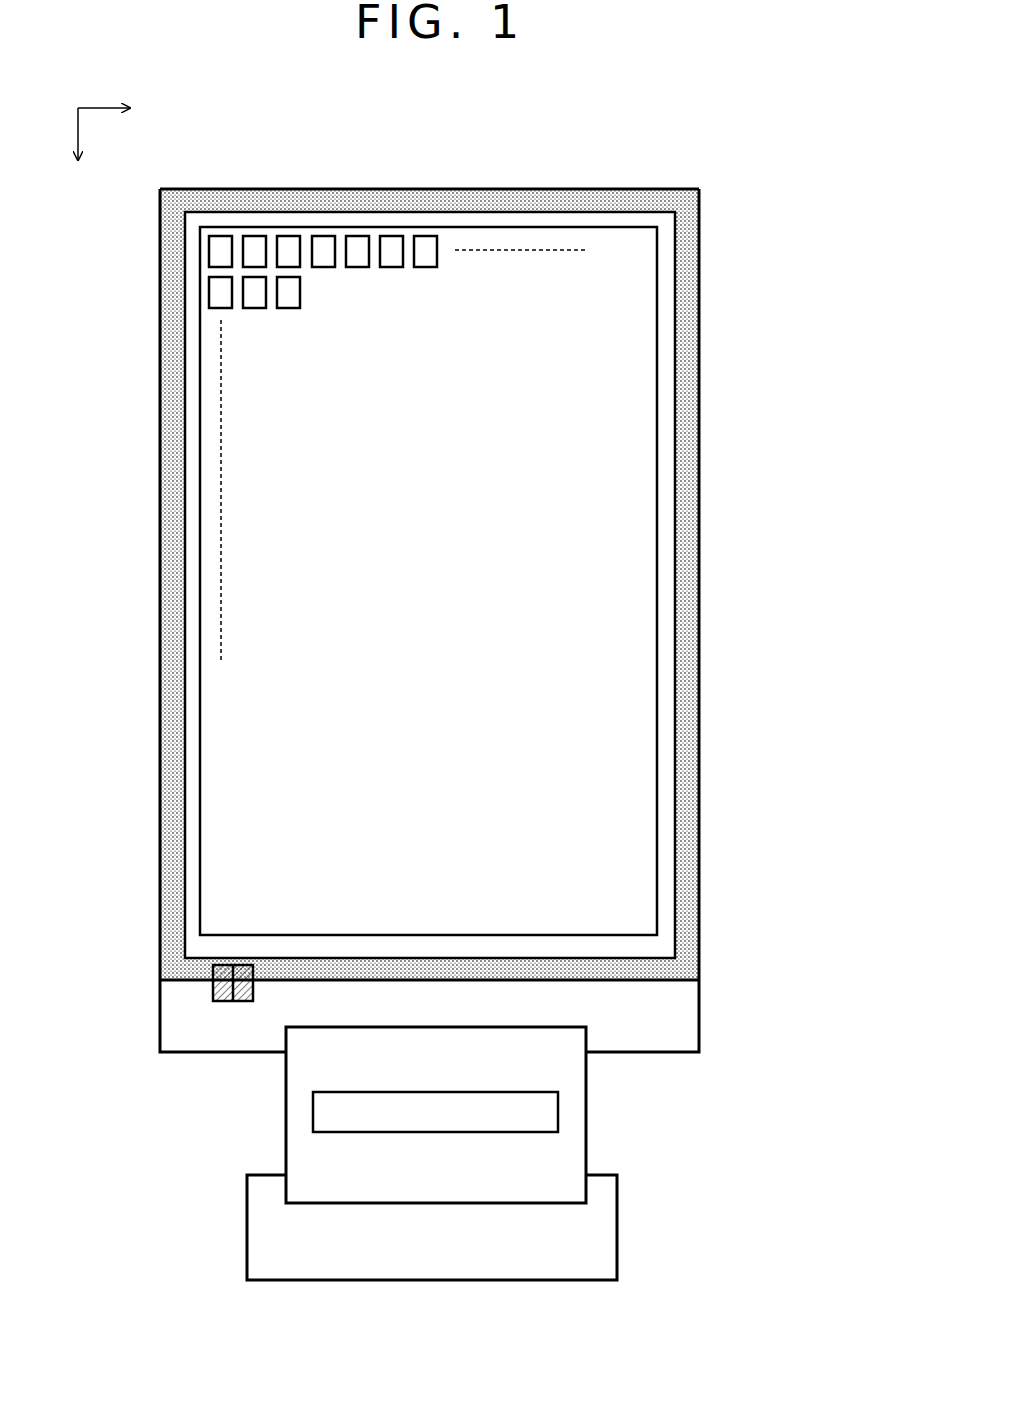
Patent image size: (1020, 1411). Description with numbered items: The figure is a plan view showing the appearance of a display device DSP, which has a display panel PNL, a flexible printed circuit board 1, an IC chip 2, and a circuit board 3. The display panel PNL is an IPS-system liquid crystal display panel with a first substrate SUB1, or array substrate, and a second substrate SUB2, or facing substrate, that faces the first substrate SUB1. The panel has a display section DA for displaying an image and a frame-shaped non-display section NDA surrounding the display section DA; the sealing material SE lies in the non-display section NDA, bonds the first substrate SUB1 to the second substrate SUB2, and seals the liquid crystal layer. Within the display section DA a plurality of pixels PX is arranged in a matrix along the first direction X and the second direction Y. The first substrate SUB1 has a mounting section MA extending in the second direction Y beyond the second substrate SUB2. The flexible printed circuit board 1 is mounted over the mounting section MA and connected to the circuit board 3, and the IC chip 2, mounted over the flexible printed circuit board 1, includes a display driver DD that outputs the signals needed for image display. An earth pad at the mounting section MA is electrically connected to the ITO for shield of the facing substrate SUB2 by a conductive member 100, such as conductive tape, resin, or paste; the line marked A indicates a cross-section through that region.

The display device DSP is at (456, 101).
The display panel PNL is at (678, 158).
The pixels PX is at (289, 236).
The display section DA is at (632, 352).
The non-display section NDA is at (665, 410).
The first substrate SUB1 is at (699, 1015).
The second substrate SUB2 is at (700, 583).
The sealing material SE is at (690, 695).
The mounting section MA is at (660, 1042).
The conductive member 100 is at (238, 1001).
The flexible printed circuit board 1 is at (586, 1138).
The IC chip 2 is at (558, 1110).
The display driver DD is at (435, 1112).
The circuit board 3 is at (617, 1220).
The cross-section line A- A is at (226, 952).
The first direction X is at (116, 112).
The second direction Y is at (77, 151).